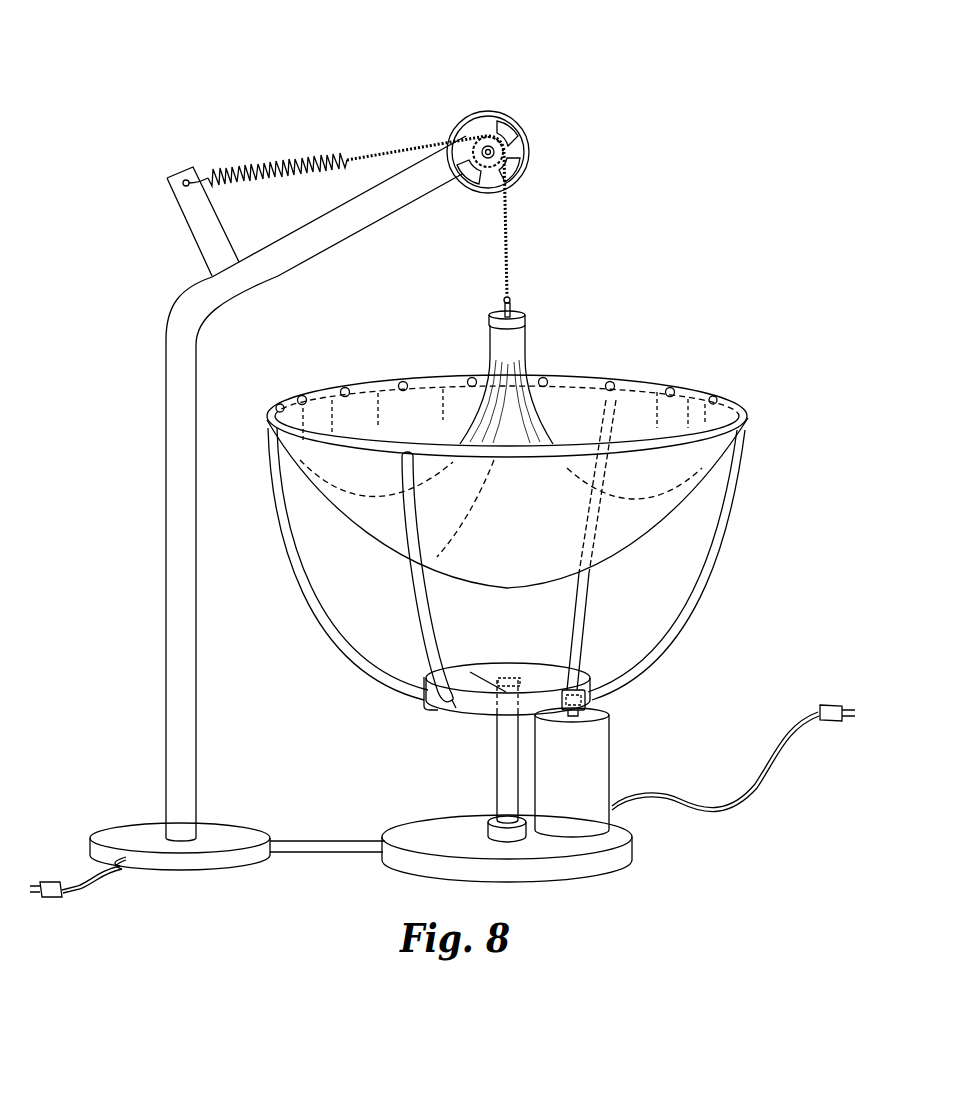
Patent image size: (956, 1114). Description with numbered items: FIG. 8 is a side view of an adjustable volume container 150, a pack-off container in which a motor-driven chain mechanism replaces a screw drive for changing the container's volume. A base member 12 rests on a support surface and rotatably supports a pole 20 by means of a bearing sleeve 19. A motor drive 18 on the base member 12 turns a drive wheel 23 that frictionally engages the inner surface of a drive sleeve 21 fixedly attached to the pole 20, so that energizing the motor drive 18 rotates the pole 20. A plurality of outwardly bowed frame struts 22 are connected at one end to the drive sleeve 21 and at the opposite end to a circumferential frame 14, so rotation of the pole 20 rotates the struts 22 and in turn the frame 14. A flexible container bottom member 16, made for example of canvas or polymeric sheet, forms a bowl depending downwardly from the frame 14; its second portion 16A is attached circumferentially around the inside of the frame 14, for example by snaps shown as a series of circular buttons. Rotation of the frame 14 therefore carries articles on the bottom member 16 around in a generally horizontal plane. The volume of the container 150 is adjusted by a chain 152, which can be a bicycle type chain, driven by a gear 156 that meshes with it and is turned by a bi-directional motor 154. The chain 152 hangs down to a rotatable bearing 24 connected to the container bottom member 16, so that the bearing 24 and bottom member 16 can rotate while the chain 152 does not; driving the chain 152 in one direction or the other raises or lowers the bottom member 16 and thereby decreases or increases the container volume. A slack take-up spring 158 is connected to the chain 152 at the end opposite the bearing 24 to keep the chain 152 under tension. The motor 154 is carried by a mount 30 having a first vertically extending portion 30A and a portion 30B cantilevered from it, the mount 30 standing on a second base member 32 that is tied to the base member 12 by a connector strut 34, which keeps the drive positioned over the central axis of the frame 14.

The base member 12 is at (617, 857).
The circumferential frame 14 is at (745, 430).
The container bottom member 16 is at (538, 410).
The second portion of container bottom member 16A is at (357, 412).
The motor drive 18 is at (600, 758).
The bearing sleeve 19 is at (487, 827).
The pole 20 is at (503, 752).
The drive sleeve 21 is at (425, 690).
The frame struts 22 is at (298, 572).
The drive wheel 23 is at (590, 668).
The rotatable bearing 24 is at (500, 306).
The mount 30 is at (128, 383).
The first vertically extending portion 30A is at (166, 494).
The cantilevered portion 30B is at (290, 255).
The base member 32 is at (138, 838).
The connector strut 34 is at (307, 840).
The adjustable volume container 150 is at (280, 58).
The chain 152 is at (512, 222).
The bi-directional motor 154 is at (500, 118).
The gear 156 is at (517, 180).
The slack take-up spring 158 is at (292, 158).